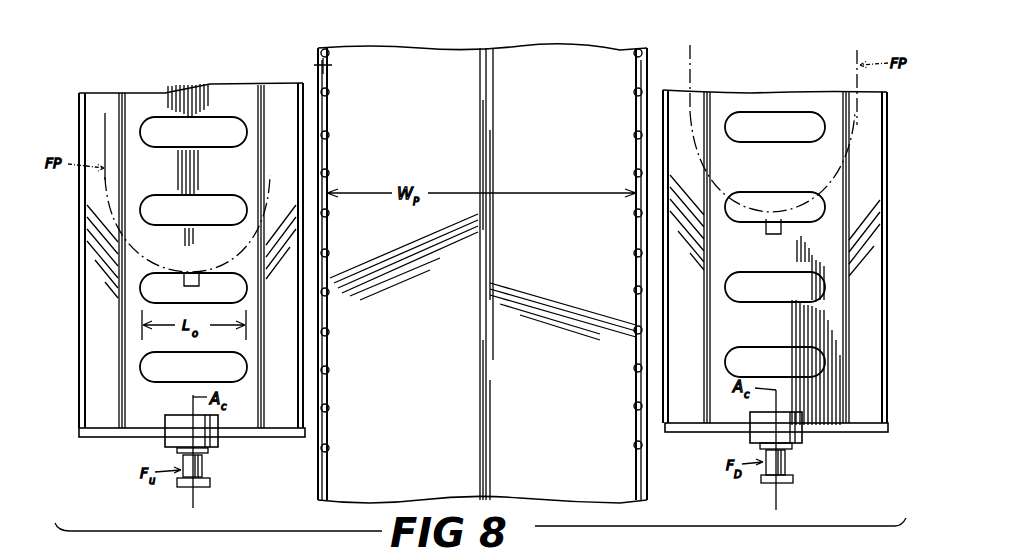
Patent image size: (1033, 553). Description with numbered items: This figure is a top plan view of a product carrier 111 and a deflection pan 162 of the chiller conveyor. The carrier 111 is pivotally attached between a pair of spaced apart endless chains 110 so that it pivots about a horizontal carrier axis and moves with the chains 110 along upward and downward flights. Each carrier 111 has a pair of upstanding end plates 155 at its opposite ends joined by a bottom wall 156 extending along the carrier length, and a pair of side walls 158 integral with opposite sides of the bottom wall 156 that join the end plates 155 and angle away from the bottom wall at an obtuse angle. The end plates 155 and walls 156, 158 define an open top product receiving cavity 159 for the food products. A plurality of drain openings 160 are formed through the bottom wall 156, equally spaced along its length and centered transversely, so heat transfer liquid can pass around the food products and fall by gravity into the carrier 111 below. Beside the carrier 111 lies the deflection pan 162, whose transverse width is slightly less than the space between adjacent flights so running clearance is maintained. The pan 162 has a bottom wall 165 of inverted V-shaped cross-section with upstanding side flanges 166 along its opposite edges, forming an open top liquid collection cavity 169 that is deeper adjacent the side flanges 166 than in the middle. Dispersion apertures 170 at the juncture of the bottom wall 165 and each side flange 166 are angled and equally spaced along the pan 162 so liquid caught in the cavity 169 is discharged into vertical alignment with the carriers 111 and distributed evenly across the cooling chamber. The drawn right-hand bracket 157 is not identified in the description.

The endless chains 110 is at (204, 467).
The carrier 111 is at (118, 93).
The end plates 155 is at (112, 435).
The bottom wall 156 is at (206, 93).
The right-hand bracket 157 is at (775, 277).
The side walls 158 is at (262, 92).
The product receiving cavity 159 is at (96, 131).
The drain openings 160 is at (200, 141).
The upper deflection pan 162 is at (590, 41).
The bottom wall 165 is at (416, 52).
The side flanges 166 is at (320, 52).
The liquid collection cavity 169 is at (313, 68).
The dispersion apertures 170 is at (328, 100).